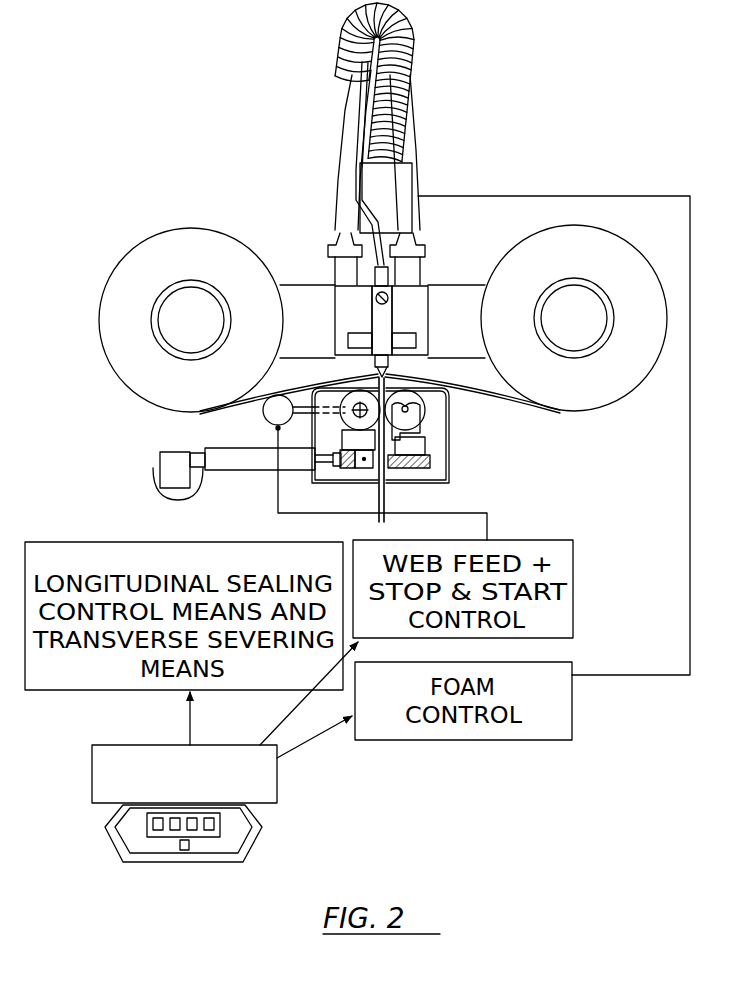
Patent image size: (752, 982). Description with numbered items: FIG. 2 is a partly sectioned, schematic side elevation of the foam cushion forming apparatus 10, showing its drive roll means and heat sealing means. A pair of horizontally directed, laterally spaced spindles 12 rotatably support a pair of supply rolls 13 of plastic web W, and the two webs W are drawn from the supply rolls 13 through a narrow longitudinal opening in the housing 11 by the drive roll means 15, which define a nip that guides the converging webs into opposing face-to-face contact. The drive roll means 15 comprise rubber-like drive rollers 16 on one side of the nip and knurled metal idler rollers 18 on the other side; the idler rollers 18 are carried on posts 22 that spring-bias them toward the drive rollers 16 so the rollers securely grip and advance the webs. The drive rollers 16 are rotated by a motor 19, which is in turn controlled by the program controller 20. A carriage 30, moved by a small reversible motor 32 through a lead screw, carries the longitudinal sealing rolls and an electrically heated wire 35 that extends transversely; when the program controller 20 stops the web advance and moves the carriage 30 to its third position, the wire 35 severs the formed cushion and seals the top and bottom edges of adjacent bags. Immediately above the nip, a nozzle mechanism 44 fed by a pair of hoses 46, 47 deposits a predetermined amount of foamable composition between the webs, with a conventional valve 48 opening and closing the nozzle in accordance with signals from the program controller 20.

The apparatus 10 is at (492, 80).
The housing 11 is at (440, 487).
The spindle 12 is at (202, 332).
The supply roll 13 is at (130, 268).
The drive roll means 15 is at (505, 490).
The drive roller 16 is at (352, 395).
The idler roller 18 is at (420, 405).
The motor 19 is at (268, 426).
The program controller 20 is at (278, 780).
The post 22 is at (430, 463).
The carriage 30 is at (343, 475).
The reversible motor 32 is at (153, 478).
The heated wire 35 is at (367, 468).
The nozzle mechanism 44 is at (395, 365).
The hose 46 is at (342, 180).
The hose 47 is at (408, 152).
The valve 48 is at (398, 199).
The plastic web W is at (517, 400).